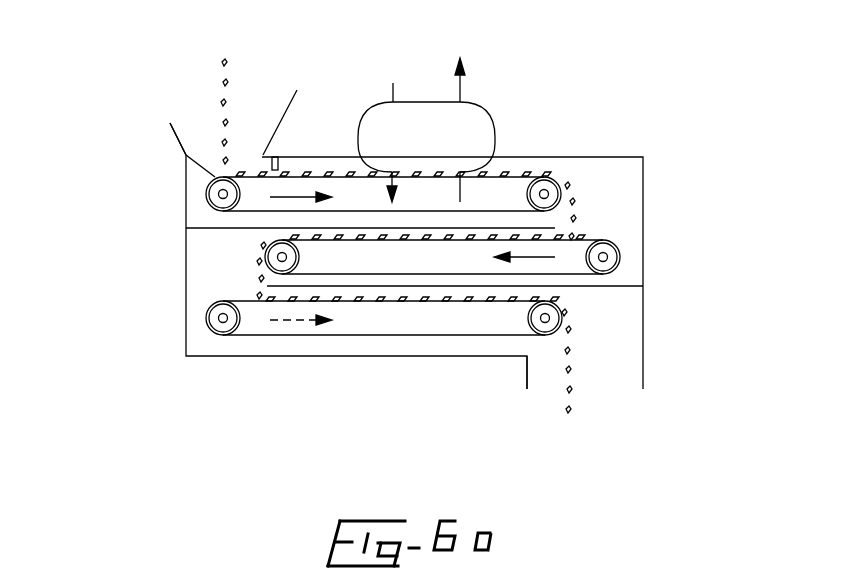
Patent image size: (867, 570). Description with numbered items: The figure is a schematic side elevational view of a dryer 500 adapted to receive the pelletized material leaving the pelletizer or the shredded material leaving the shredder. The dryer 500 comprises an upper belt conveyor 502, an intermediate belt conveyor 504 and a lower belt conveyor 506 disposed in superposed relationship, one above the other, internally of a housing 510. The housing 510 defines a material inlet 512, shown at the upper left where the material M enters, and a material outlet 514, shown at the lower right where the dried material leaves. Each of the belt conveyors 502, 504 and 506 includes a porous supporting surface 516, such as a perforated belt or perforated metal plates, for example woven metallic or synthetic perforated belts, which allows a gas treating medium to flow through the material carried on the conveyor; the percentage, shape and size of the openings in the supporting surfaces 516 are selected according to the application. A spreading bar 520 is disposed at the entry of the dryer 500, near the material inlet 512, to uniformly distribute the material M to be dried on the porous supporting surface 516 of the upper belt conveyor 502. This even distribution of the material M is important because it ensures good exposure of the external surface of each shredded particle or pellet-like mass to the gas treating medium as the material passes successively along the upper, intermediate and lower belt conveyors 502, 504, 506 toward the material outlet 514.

The dryer 500 is at (622, 157).
The upper belt conveyor 502 is at (505, 193).
The intermediate belt conveyor 504 is at (573, 265).
The lower belt conveyor 506 is at (372, 325).
The housing 510 is at (648, 166).
The material inlet 512 is at (186, 125).
The material outlet 514 is at (604, 367).
The porous supporting surface 516 is at (313, 173).
The spreading bar 520 is at (272, 158).
The material M is at (216, 85).